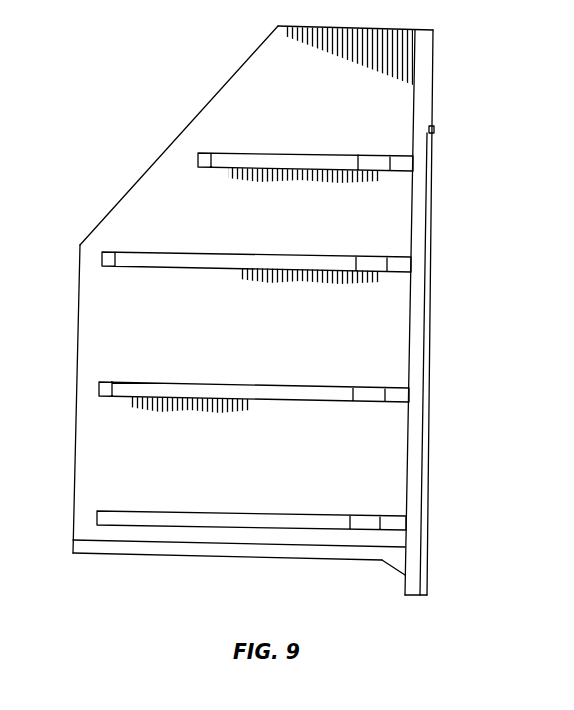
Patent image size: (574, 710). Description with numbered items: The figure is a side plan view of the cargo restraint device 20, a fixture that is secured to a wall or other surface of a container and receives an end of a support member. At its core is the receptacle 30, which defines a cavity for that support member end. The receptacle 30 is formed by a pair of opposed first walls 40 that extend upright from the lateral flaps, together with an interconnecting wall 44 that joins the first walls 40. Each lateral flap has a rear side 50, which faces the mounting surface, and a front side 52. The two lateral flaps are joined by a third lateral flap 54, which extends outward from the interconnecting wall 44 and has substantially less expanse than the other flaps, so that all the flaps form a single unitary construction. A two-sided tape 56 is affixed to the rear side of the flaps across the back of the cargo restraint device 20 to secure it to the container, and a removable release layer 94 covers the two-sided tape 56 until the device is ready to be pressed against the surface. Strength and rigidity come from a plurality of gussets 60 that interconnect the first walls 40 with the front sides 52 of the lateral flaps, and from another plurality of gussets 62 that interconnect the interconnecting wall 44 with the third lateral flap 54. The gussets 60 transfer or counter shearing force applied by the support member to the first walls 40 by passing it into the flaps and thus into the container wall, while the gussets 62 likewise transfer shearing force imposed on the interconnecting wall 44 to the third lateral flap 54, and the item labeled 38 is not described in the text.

The cargo restraint device 20 is at (266, 322).
The receptacle 30 is at (327, 325).
The shelf 38 is at (280, 414).
The first wall 40 is at (282, 418).
The interconnecting wall 44 is at (262, 560).
The rear side 50 is at (435, 132).
The front side 52 is at (418, 324).
The third lateral flap 54 is at (397, 590).
The two-sided tape 56 is at (428, 337).
The gussets 60 is at (255, 326).
The gussets 62 is at (400, 567).
The release layer 94 is at (335, 170).